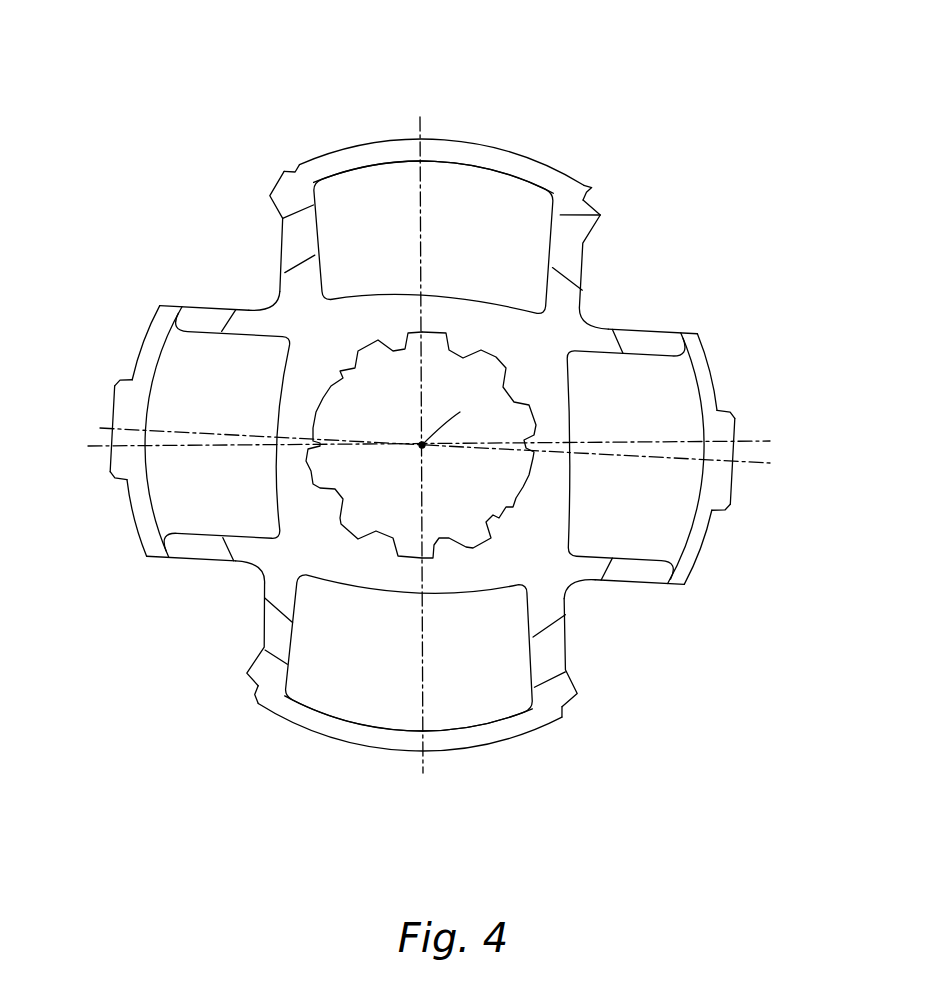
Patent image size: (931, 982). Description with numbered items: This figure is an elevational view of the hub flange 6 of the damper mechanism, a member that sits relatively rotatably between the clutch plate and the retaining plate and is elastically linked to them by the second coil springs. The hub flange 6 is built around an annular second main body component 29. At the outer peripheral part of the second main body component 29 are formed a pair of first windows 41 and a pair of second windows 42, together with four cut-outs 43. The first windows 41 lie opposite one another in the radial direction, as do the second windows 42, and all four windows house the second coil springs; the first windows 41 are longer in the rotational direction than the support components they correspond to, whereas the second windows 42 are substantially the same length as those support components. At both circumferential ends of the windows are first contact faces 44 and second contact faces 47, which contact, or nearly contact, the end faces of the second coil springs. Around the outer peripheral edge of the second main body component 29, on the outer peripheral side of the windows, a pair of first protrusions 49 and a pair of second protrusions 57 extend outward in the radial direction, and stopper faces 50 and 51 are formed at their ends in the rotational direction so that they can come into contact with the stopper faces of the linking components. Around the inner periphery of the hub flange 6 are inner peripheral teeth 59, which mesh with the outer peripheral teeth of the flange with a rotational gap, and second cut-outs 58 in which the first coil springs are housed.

The hub flange 6 is at (420, 432).
The second main body component 29 is at (290, 300).
The first windows 41 is at (355, 166).
The second windows 42 is at (137, 471).
The cut-outs 43 is at (281, 181).
The first contact faces 44 is at (315, 228).
The second contact faces 47 is at (212, 331).
The first protrusions 49 is at (305, 720).
The stopper faces 50 is at (297, 172).
The stopper faces 51 is at (122, 378).
The second protrusions 57 is at (126, 406).
The second cut-outs 58 is at (514, 510).
The inner peripheral teeth 59 is at (447, 553).